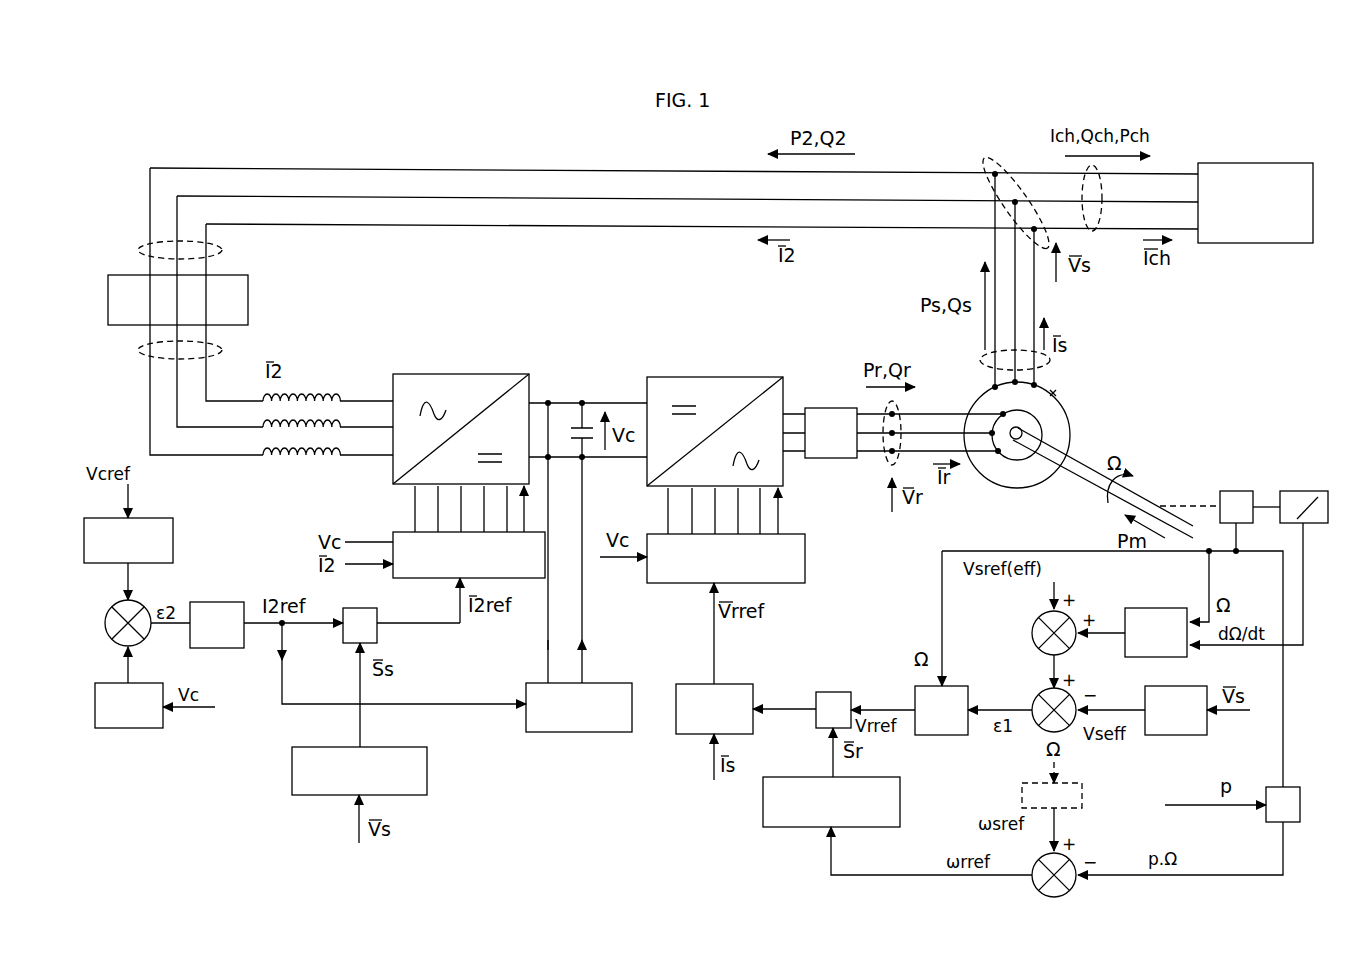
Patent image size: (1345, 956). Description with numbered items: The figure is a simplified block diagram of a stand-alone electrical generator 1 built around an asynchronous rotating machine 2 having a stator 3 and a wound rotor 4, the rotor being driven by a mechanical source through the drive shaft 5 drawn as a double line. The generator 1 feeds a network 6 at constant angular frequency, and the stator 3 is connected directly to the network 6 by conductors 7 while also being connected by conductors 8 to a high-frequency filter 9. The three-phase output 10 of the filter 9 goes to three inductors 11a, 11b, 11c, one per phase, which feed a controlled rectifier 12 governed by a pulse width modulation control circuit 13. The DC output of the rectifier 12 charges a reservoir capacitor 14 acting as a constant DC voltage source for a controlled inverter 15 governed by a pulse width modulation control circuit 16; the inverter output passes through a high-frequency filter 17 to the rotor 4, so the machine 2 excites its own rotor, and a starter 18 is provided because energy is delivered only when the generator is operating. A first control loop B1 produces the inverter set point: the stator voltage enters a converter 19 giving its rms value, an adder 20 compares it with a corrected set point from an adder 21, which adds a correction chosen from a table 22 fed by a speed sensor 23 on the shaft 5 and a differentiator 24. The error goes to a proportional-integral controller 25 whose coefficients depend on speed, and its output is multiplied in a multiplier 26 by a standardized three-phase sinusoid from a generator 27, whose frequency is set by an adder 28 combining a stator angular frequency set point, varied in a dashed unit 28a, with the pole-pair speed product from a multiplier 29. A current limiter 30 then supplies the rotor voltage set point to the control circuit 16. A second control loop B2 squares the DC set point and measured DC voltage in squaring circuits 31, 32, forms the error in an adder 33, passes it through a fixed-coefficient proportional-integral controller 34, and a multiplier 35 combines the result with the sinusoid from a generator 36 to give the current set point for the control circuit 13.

The stand-alone electrical generator 1 is at (1027, 411).
The asynchronous rotating machine 2 is at (1056, 392).
The stator 3 is at (1068, 418).
The wound rotor 4 is at (1006, 461).
The drive shaft 5 is at (1072, 466).
The network 6 is at (1222, 176).
The conductors 7 is at (1093, 232).
The conductors 8 is at (140, 250).
The high-frequency filter 9 is at (226, 290).
The three-phase output 10 is at (140, 352).
The inductor 11a is at (283, 396).
The inductor 11b is at (262, 436).
The inductor 11c is at (336, 462).
The controlled rectifier 12 is at (486, 384).
The pulse width modulation control circuit 13 is at (410, 532).
The reservoir capacitor 14 is at (569, 425).
The controlled inverter 15 is at (740, 386).
The pulse width modulation control circuit 16 is at (662, 534).
The high-frequency filter 17 is at (830, 417).
The starter 18 is at (592, 690).
The converter 19 is at (1173, 735).
The adder 20 is at (1045, 695).
The adder 21 is at (1043, 618).
The table 22 is at (1168, 616).
The sensor 23 is at (1232, 490).
The differentiator 24 is at (1312, 490).
The proportional-integral controller 25 is at (955, 737).
The multiplier 26 is at (846, 692).
The generator 27 is at (815, 802).
The adder 28 is at (1046, 860).
The unit 28a is at (1022, 796).
The multiplier 29 is at (1268, 815).
The current limiter 30 is at (680, 738).
The squaring circuit 31 is at (145, 520).
The squaring circuit 32 is at (143, 683).
The adder 33 is at (118, 612).
The proportional-integral controller 34 is at (222, 602).
The multiplier 35 is at (343, 637).
The generator 36 is at (292, 751).
The first control loop B1 is at (925, 623).
The second control loop B2 is at (480, 773).